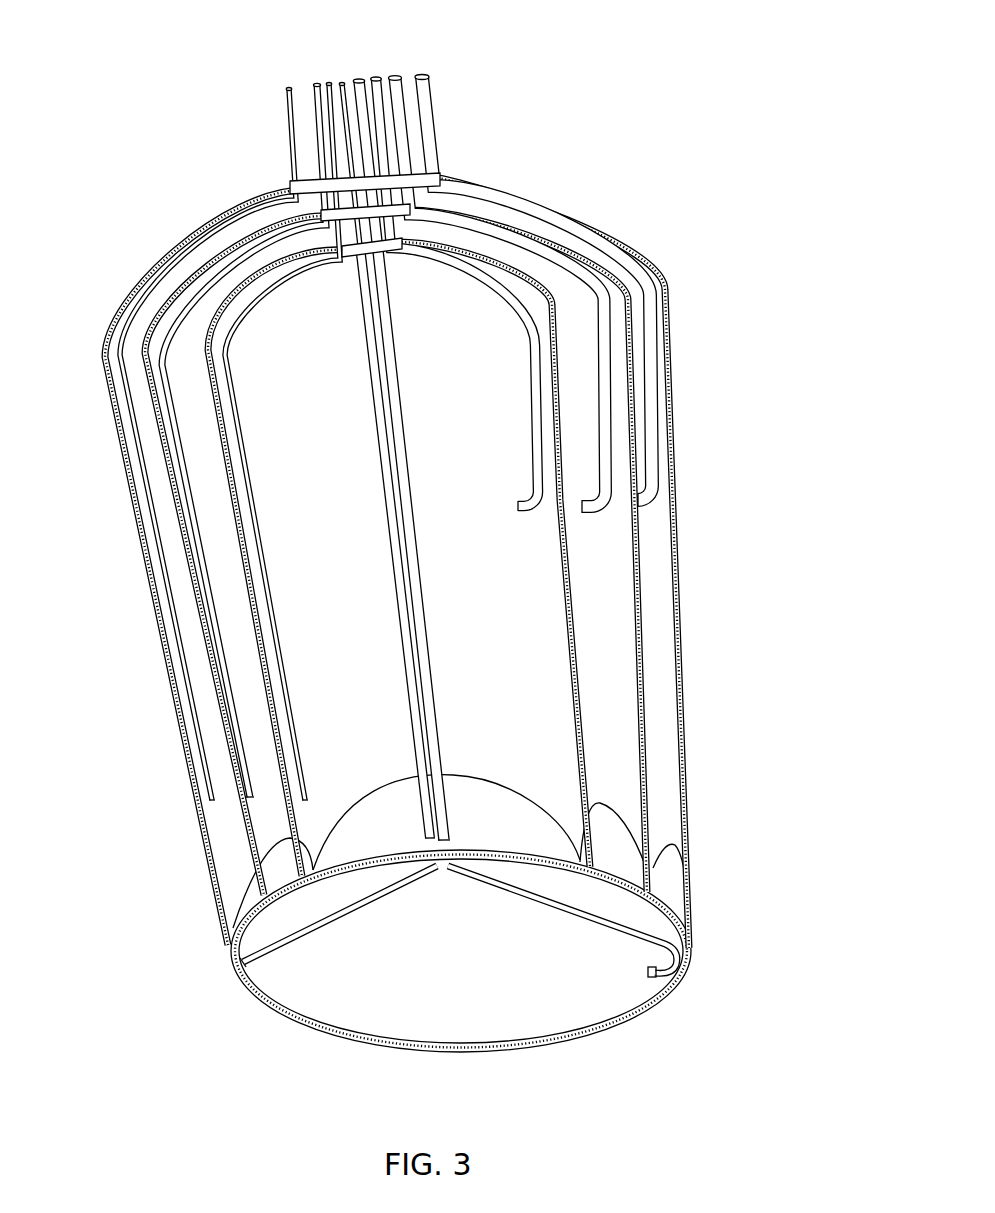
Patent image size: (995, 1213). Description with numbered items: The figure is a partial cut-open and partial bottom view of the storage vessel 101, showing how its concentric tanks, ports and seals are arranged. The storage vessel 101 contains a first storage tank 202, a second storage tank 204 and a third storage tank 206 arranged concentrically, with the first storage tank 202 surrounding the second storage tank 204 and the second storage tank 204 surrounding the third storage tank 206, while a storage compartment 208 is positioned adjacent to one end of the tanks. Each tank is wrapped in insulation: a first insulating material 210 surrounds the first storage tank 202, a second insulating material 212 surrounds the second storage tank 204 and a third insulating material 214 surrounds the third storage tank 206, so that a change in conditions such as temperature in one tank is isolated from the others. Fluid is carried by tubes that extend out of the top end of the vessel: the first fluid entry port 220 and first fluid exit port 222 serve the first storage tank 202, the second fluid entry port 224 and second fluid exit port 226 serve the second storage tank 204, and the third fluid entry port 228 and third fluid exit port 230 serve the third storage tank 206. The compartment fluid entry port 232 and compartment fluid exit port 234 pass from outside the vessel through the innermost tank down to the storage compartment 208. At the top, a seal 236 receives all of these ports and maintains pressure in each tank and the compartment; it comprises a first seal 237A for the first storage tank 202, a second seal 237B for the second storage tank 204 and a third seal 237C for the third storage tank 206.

The storage vessel 101 is at (640, 92).
The first storage tank 202 is at (220, 820).
The second storage tank 204 is at (265, 837).
The third storage tank 206 is at (300, 293).
The storage compartment 208 is at (522, 1003).
The first insulating material 210 is at (672, 563).
The second insulating material 212 is at (637, 667).
The third insulating material 214 is at (580, 767).
The first fluid entry port 220 is at (288, 89).
The first fluid exit port 222 is at (424, 77).
The second fluid entry port 224 is at (316, 85).
The second fluid exit port 226 is at (396, 78).
The third fluid entry port 228 is at (329, 84).
The third fluid exit port 230 is at (377, 79).
The compartment fluid entry port 232 is at (342, 84).
The compartment fluid exit port 234 is at (359, 80).
The seal 236 is at (300, 165).
The first seal 237A is at (430, 176).
The second seal 237B is at (400, 212).
The third seal 237C is at (352, 246).